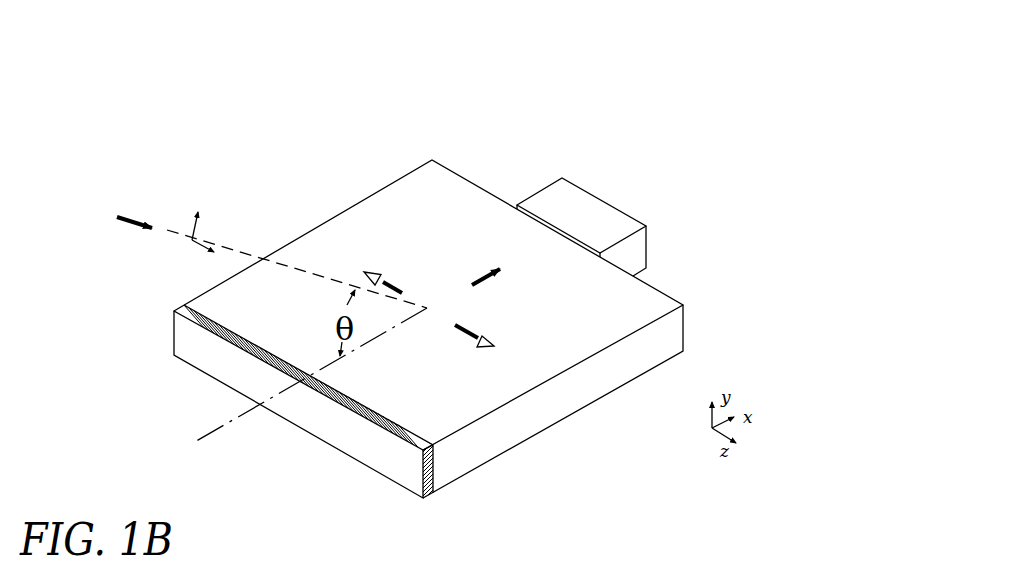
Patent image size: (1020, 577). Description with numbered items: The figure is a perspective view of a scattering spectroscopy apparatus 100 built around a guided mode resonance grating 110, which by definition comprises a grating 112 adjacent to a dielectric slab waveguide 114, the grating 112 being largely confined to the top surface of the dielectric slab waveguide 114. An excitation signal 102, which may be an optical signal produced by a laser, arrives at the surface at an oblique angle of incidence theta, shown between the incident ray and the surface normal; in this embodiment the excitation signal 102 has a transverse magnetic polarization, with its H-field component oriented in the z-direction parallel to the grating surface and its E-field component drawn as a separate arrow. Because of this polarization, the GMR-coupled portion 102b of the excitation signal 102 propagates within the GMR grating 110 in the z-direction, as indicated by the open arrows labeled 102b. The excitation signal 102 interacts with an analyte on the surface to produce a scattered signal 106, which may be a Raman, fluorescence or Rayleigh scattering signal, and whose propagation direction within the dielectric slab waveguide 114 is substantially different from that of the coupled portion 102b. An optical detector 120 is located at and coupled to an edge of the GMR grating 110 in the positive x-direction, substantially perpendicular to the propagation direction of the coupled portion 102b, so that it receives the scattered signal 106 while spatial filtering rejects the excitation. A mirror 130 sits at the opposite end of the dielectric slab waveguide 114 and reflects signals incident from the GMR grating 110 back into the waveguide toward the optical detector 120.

The scattering spectroscopy apparatus 100 is at (718, 60).
The guided mode resonance (GMR) grating 110 is at (483, 137).
The grating 112 is at (490, 329).
The dielectric slab waveguide 114 is at (640, 295).
The optical detector 120 is at (597, 203).
The mirror 130 is at (178, 308).
The excitation signal 102 is at (135, 215).
The GMR-coupled portion of the excitation signal 102b is at (487, 343).
The scattered signal 106 is at (478, 272).